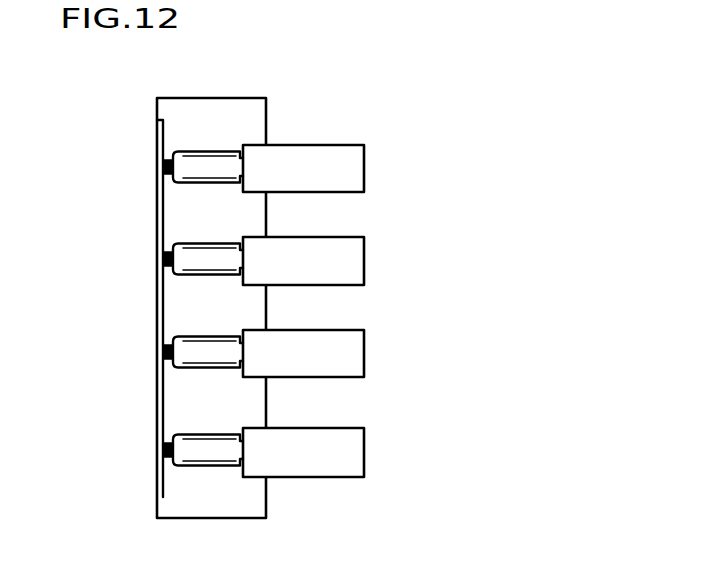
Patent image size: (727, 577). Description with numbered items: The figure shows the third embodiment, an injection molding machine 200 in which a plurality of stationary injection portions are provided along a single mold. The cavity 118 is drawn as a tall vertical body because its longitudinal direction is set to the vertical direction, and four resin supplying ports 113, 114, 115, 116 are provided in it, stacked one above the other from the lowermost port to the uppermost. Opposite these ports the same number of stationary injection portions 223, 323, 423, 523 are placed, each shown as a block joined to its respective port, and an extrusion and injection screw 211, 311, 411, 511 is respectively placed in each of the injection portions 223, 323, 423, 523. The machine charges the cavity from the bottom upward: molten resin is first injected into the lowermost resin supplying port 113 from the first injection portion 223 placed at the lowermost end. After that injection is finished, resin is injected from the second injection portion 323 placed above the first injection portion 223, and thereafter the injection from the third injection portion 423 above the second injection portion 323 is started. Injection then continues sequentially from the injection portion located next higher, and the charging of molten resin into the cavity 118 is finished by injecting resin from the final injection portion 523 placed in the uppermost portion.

The injection molding machine 200 is at (553, 226).
The cavity 118 is at (158, 482).
The resin supplying port 116 is at (163, 165).
The resin supplying port 115 is at (163, 257).
The resin supplying port 114 is at (163, 350).
The resin supplying port 113 is at (163, 448).
The extrusion and injection screw 511 is at (300, 187).
The extrusion and injection screw 411 is at (300, 280).
The extrusion and injection screw 311 is at (300, 372).
The extrusion and injection screw 211 is at (300, 472).
The stationary injection portion 523 is at (274, 177).
The stationary injection portion 423 is at (274, 272).
The stationary injection portion 323 is at (274, 365).
The stationary injection portion 223 is at (274, 459).